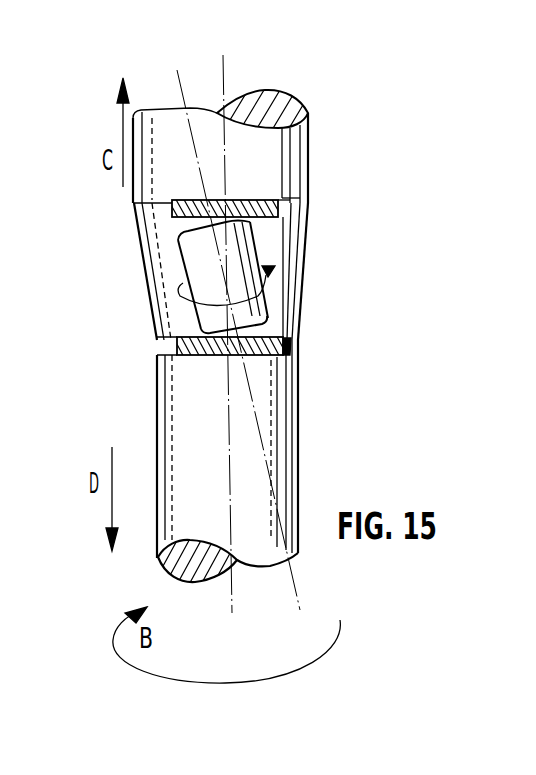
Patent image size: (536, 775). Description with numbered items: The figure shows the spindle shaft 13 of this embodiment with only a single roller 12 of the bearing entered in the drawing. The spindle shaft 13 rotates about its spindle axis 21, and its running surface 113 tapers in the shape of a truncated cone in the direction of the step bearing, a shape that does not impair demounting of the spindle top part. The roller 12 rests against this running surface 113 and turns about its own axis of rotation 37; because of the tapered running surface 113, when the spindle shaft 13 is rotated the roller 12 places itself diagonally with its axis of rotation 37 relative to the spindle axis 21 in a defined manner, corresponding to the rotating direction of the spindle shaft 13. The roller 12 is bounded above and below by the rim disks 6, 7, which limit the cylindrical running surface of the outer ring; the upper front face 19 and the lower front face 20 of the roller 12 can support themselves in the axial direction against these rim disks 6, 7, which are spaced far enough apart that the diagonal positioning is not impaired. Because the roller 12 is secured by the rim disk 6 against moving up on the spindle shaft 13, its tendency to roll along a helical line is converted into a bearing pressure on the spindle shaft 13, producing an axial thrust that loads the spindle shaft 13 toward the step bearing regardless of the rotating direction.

The axis of rotation 37 is at (180, 85).
The spindle axis 21 is at (223, 65).
The spindle shaft 13 is at (282, 152).
The rim disk 6 is at (281, 208).
The front face 19 is at (182, 229).
The roller 12 is at (200, 268).
The running surface 113 is at (300, 283).
The front face 20 is at (262, 326).
The rim disk 7 is at (293, 370).